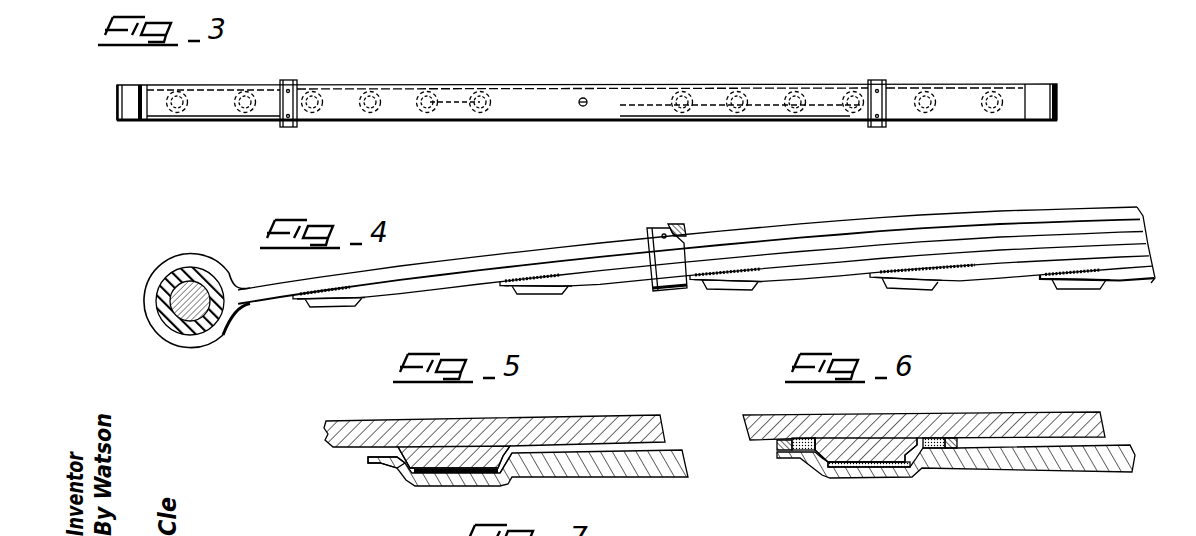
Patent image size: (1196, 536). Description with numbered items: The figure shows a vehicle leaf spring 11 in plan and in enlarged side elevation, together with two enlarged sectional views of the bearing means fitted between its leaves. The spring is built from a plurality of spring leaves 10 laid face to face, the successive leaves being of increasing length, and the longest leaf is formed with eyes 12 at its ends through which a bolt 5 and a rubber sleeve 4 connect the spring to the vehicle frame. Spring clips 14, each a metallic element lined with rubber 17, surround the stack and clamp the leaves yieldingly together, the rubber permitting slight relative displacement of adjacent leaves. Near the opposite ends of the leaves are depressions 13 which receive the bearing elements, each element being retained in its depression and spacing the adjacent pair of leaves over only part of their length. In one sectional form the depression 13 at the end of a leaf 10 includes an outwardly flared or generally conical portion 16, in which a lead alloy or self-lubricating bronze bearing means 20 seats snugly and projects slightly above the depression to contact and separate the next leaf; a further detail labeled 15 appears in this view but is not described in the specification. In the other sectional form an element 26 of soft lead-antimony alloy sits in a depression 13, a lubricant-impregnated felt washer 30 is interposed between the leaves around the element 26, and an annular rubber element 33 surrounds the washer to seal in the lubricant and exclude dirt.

In FIG. 4, the rubber sleeve 4 is at (188, 335).
In FIG. 4, the bolt 5 is at (158, 310).
In FIG. 3, the spring leaves 10 is at (617, 110).
In FIG. 4, the spring leaves 10 is at (477, 258).
In FIG. 5, the spring leaves 10 is at (625, 472).
In FIG. 6, the spring leaves 10 is at (1048, 468).
In FIG. 3, the leaf spring 11 is at (545, 95).
In FIG. 4, the leaf spring 11 is at (948, 222).
In FIG. 5, the leaf spring 11 is at (494, 441).
In FIG. 6, the leaf spring 11 is at (924, 437).
In FIG. 3, the eyes 12 is at (133, 118).
In FIG. 4, the eyes 12 is at (185, 257).
In FIG. 3, the depressions 13 is at (353, 118).
In FIG. 4, the depressions 13 is at (330, 306).
In FIG. 5, the depressions 13 is at (443, 483).
In FIG. 6, the depressions 13 is at (863, 468).
In FIG. 3, the spring clips 14 is at (288, 80).
In FIG. 4, the spring clips 14 is at (667, 272).
In FIG. 5, the flange 15 is at (407, 480).
In FIG. 5, the outwardly flared or generally conical portion 16 is at (502, 475).
In FIG. 4, the rubber lining 17 is at (686, 229).
In FIG. 5, the bearing means 20 is at (513, 472).
In FIG. 6, the element 26 is at (923, 467).
In FIG. 6, the washer 30 is at (790, 455).
In FIG. 6, the annular element 33 is at (785, 447).